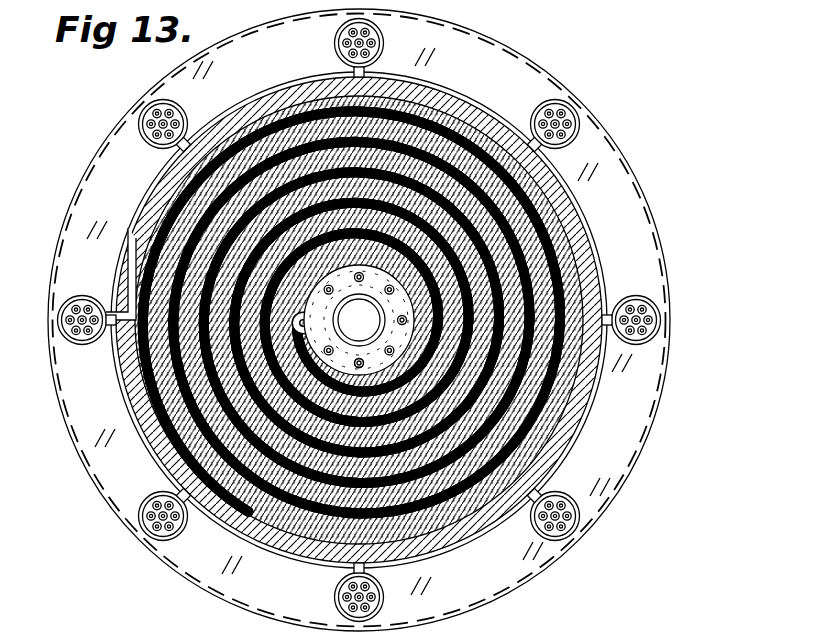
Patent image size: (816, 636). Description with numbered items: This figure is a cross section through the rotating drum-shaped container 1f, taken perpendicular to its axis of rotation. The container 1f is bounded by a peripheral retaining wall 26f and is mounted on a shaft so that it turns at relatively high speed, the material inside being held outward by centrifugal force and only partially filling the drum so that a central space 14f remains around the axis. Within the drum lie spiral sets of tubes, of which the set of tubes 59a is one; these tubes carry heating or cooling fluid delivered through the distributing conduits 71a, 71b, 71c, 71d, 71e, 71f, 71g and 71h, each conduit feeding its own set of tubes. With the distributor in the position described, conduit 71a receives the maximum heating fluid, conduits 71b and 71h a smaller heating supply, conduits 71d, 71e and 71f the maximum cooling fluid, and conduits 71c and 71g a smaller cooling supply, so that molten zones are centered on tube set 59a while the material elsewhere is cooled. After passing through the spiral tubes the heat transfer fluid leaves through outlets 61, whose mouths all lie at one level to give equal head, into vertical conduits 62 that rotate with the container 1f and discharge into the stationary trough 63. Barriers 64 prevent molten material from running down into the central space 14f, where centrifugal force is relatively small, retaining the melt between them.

The container 1f is at (503, 104).
The central space 14f is at (362, 307).
The peripheral retaining wall 26f is at (581, 228).
The set of tubes 59a is at (563, 228).
The outlets 61 is at (568, 122).
The vertical conduits 62 is at (578, 118).
The stationary trough 63 is at (110, 498).
The barriers 64 is at (361, 365).
The distributing conduit 71a is at (312, 300).
The distributing conduit 71b is at (330, 290).
The distributing conduit 71c is at (390, 290).
The distributing conduit 71d is at (370, 305).
The distributing conduit 71e is at (403, 322).
The distributing conduit 71f is at (390, 353).
The distributing conduit 71g is at (359, 365).
The distributing conduit 71h is at (329, 353).